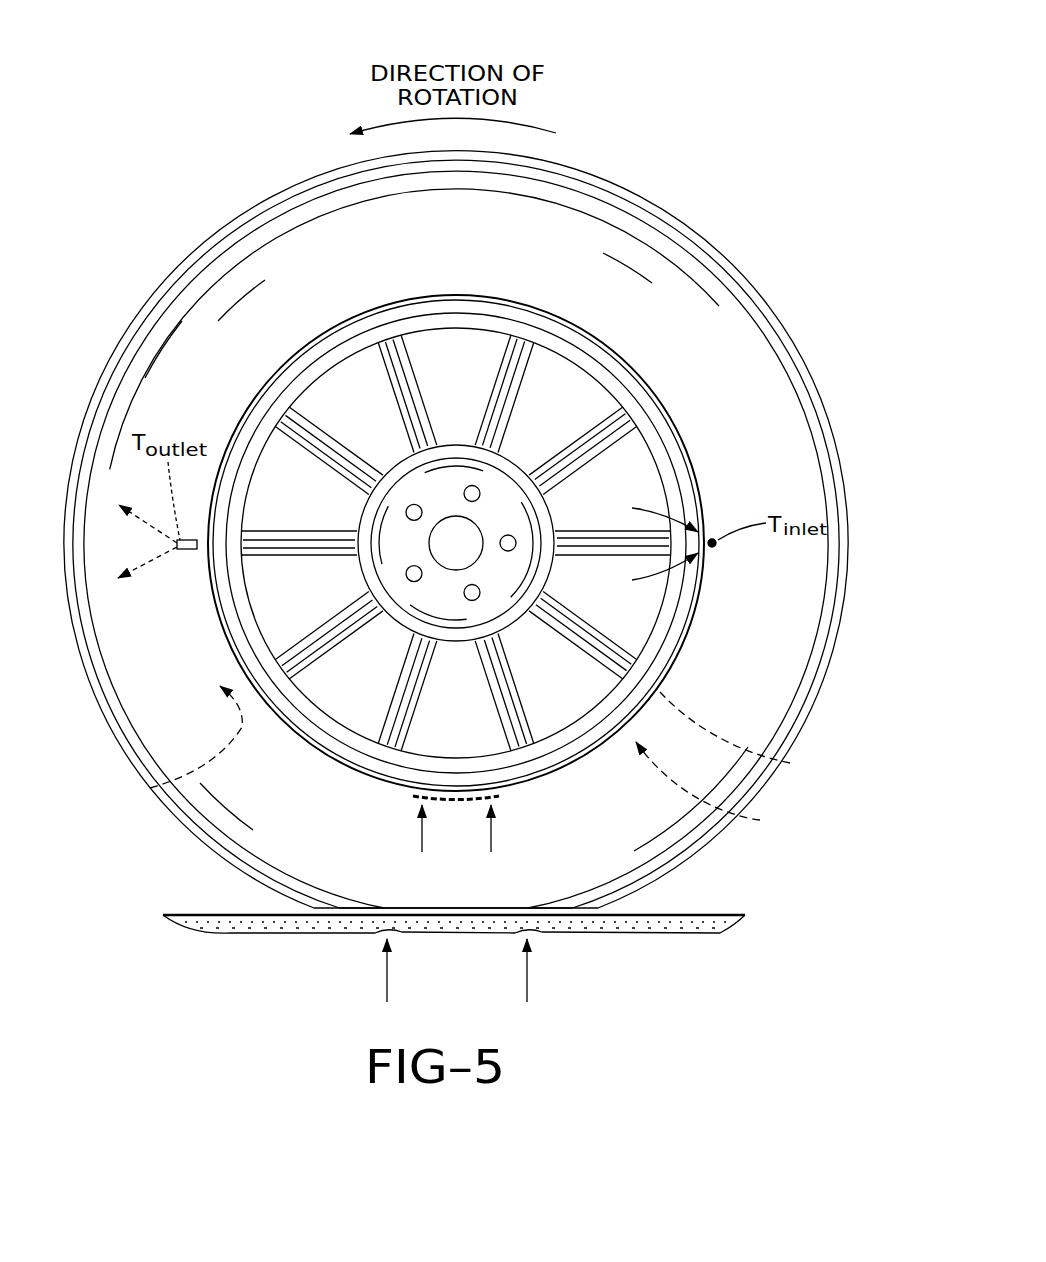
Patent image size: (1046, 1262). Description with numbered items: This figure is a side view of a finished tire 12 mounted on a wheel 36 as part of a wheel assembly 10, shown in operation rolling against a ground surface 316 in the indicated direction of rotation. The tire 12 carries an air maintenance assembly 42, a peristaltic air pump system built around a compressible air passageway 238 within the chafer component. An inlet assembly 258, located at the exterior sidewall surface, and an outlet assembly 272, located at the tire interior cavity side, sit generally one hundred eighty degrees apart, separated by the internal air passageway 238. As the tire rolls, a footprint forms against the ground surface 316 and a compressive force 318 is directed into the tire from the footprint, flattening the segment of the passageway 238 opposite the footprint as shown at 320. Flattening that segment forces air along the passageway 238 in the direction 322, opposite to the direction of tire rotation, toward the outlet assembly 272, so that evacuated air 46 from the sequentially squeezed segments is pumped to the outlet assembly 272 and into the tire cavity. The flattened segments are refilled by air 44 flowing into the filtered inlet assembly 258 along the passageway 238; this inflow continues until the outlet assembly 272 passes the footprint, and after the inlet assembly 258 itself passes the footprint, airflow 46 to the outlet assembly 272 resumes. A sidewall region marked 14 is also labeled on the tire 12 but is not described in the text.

The wheel assembly 10 is at (126, 116).
The tire 12 is at (652, 199).
The tire sidewall 14 is at (727, 333).
The wheel 36 is at (487, 373).
The inlet assembly 258 is at (719, 526).
The air 44 is at (720, 548).
The evacuated air 46 is at (178, 549).
The outlet assembly 272 is at (185, 560).
The direction 322 is at (150, 788).
The air passageway 238 is at (790, 763).
The air maintenance assembly 42 is at (760, 820).
The ground surface 316 is at (697, 914).
The compressive force 318 is at (387, 972).
The flattened segment 320 is at (421, 834).